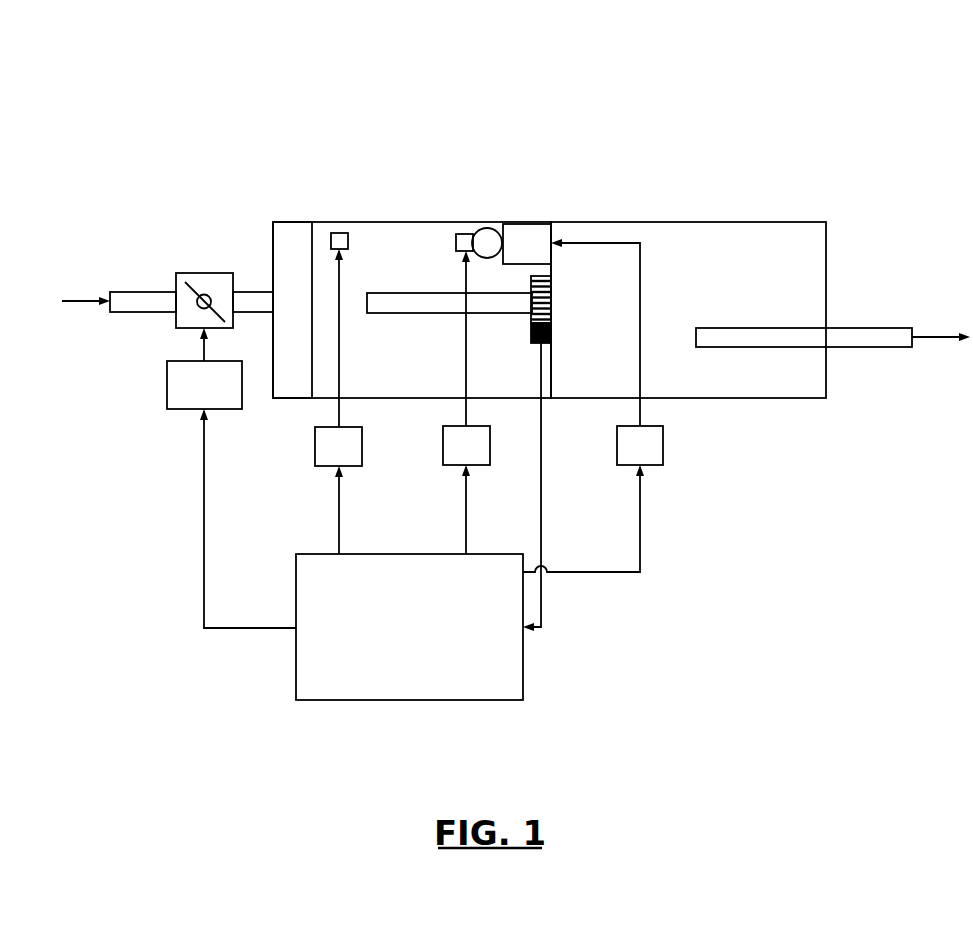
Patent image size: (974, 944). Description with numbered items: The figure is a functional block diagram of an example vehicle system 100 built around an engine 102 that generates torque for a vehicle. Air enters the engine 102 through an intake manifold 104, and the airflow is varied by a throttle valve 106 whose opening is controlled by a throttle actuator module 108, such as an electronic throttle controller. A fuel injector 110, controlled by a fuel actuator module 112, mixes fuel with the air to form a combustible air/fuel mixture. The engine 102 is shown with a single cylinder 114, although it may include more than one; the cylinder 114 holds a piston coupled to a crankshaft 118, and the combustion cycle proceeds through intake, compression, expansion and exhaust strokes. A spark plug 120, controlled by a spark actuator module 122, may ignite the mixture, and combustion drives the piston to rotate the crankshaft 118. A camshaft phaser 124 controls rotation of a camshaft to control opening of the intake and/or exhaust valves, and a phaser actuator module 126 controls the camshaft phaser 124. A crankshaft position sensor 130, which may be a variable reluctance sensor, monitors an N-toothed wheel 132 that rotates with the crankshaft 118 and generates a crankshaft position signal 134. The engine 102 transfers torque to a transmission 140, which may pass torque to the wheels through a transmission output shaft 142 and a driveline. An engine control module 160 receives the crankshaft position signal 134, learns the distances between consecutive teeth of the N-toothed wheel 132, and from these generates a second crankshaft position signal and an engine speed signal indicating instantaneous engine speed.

The vehicle system 100 is at (824, 70).
The engine 102 is at (415, 222).
The intake manifold 104 is at (298, 222).
The throttle valve 106 is at (207, 273).
The throttle actuator module 108 is at (183, 410).
The fuel injector 110 is at (339, 233).
The fuel actuator module 112 is at (320, 467).
The cylinder 114 is at (489, 227).
The crankshaft 118 is at (398, 293).
The spark plug 120 is at (463, 234).
The spark actuator module 122 is at (453, 467).
The camshaft phaser 124 is at (553, 228).
The phaser actuator module 126 is at (655, 467).
The crankshaft position sensor 130 is at (530, 343).
The N-toothed wheel 132 is at (530, 318).
The crankshaft position signal 134 is at (543, 452).
The transmission 140 is at (683, 221).
The transmission output shaft 142 is at (760, 327).
The engine control module 160 is at (415, 702).